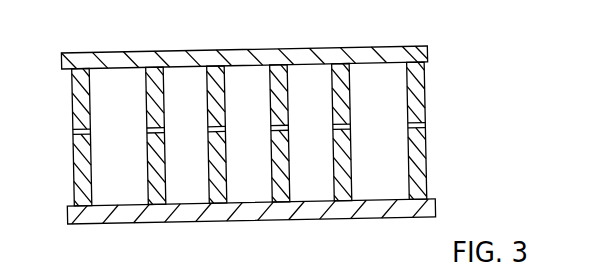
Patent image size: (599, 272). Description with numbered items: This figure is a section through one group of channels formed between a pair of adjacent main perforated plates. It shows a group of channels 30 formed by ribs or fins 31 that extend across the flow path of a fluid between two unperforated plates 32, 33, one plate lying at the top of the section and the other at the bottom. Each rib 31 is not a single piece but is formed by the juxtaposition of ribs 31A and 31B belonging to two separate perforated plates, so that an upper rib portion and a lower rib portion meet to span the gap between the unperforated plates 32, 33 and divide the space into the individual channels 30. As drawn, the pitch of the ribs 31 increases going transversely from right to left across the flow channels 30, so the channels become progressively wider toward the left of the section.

The channels 30 is at (193, 82).
The ribs 31 is at (141, 109).
The rib of first perforated plate 31A is at (89, 96).
The rib of second perforated plate 31B is at (73, 179).
The unperforated plate 32 is at (388, 55).
The unperforated plate 33 is at (302, 215).